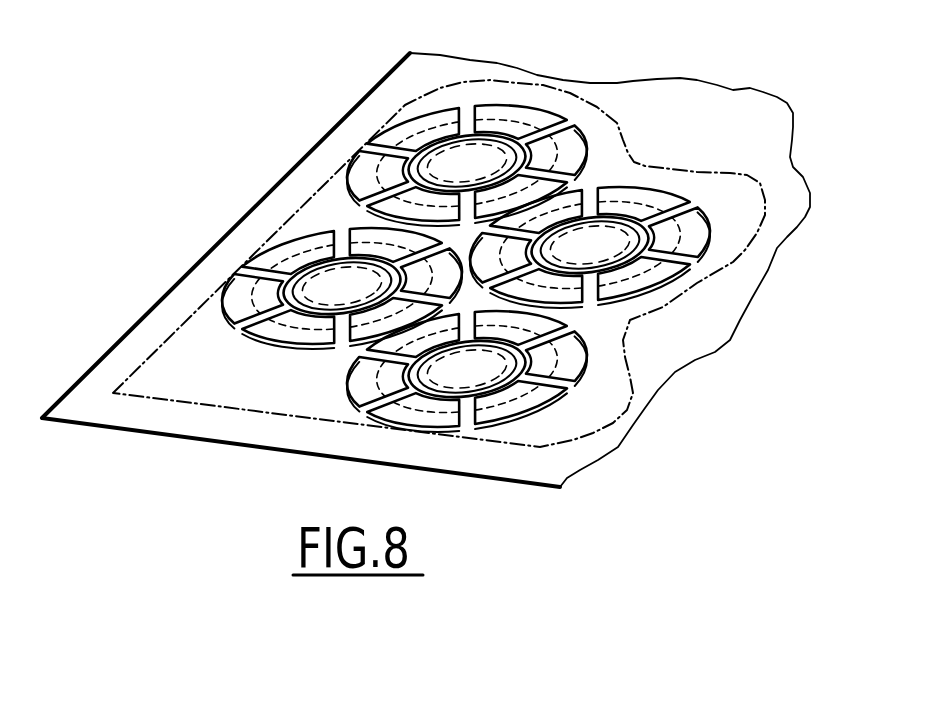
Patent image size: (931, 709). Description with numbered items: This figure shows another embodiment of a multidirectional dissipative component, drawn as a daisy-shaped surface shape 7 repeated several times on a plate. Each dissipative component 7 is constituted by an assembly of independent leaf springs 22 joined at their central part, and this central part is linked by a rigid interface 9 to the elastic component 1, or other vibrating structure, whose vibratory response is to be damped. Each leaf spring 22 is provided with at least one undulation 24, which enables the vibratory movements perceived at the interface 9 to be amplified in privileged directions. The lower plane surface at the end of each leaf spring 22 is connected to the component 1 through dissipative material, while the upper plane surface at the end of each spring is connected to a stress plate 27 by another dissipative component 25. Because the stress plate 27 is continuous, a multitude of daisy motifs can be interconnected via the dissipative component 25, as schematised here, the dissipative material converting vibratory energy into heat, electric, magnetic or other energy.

The elastic component 1 is at (84, 408).
The dissipative component 7 is at (263, 89).
The rigid interface 9 is at (469, 378).
The leaf spring 22 is at (287, 247).
The undulation 24 is at (522, 380).
The dissipative component 25 is at (697, 237).
The stress plate 27 is at (262, 420).